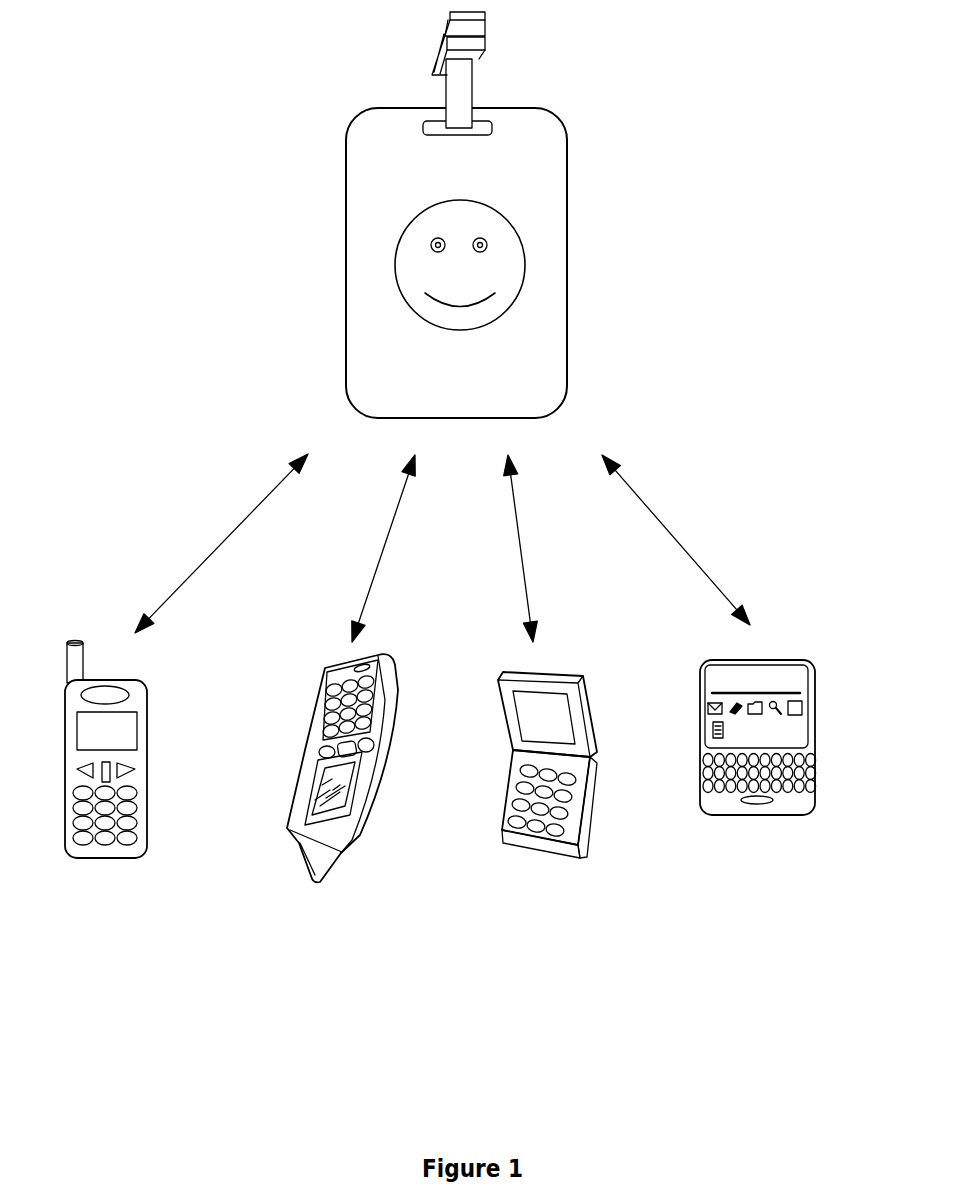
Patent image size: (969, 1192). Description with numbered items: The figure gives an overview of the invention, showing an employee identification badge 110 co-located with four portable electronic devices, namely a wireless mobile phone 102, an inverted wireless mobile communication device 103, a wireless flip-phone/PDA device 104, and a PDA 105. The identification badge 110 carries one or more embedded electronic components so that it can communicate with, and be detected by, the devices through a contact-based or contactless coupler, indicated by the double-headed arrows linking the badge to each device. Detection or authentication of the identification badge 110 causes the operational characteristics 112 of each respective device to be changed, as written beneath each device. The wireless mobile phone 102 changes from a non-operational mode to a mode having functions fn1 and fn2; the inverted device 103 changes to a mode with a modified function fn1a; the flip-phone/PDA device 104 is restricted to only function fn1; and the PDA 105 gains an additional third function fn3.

The employee identification badge 110 is at (568, 192).
The wireless mobile phone 102 is at (147, 692).
The inverted wireless mobile communication device 103 is at (398, 700).
The wireless flip-phone/PDA device 104 is at (586, 697).
The PDA 105 is at (816, 678).
The operational characteristics 112 is at (120, 967).